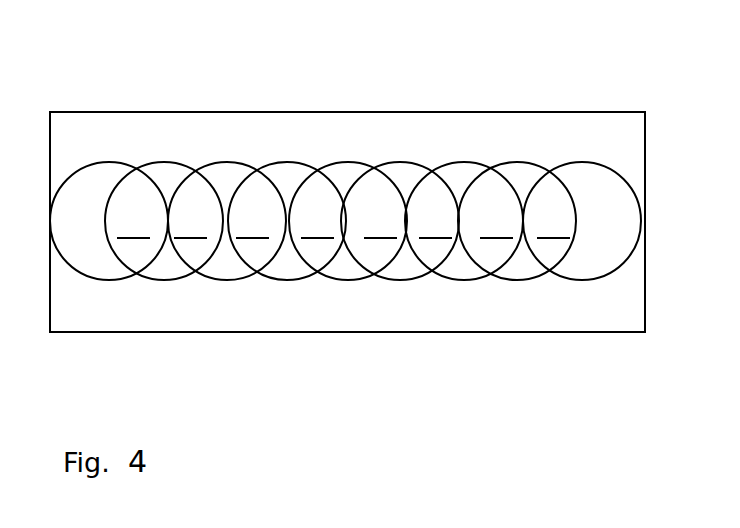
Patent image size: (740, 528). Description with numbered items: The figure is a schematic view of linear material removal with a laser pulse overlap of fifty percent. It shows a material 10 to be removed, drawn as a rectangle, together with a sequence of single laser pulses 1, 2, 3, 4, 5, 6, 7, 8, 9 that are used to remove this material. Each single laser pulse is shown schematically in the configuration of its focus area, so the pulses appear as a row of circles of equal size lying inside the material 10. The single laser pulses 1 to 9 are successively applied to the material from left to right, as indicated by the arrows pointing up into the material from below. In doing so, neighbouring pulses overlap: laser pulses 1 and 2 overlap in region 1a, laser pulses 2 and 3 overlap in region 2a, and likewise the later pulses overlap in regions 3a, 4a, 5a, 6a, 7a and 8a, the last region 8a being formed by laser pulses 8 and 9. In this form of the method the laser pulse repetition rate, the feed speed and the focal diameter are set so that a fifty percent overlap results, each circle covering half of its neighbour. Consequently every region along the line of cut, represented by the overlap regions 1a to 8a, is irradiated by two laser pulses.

The material 10 is at (436, 141).
The single laser pulse 1 is at (105, 291).
The single laser pulse 2 is at (158, 291).
The single laser pulse 3 is at (223, 291).
The single laser pulse 4 is at (278, 291).
The single laser pulse 5 is at (342, 291).
The single laser pulse 6 is at (395, 291).
The single laser pulse 7 is at (459, 291).
The single laser pulse 8 is at (513, 291).
The single laser pulse 9 is at (590, 291).
The overlap region 1a is at (133, 223).
The overlap region 2a is at (190, 223).
The overlap region 3a is at (252, 223).
The overlap region 4a is at (317, 223).
The overlap region 5a is at (380, 223).
The overlap region 6a is at (435, 223).
The overlap region 7a is at (496, 223).
The overlap region 8a is at (553, 223).